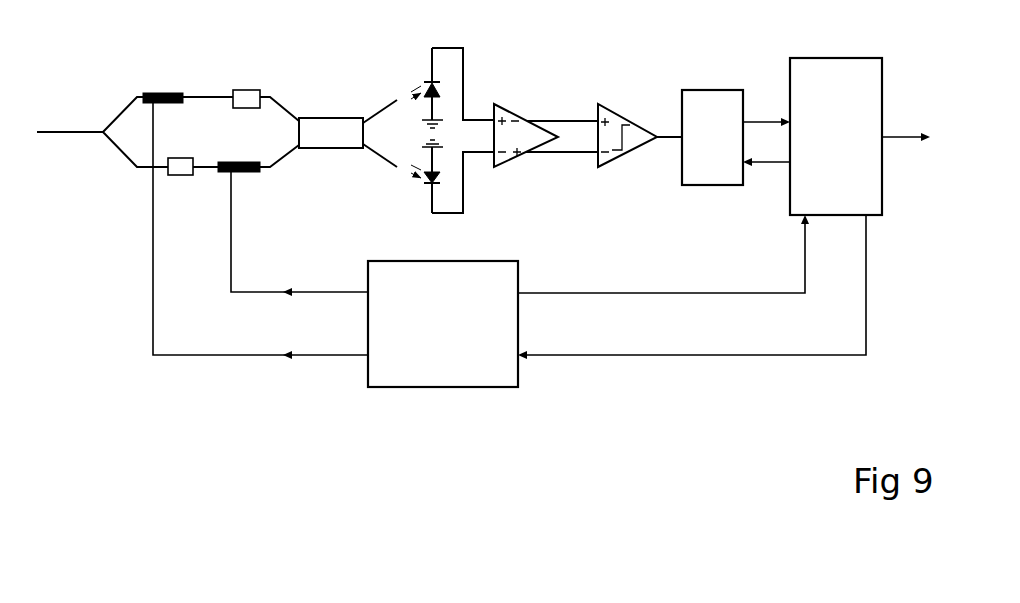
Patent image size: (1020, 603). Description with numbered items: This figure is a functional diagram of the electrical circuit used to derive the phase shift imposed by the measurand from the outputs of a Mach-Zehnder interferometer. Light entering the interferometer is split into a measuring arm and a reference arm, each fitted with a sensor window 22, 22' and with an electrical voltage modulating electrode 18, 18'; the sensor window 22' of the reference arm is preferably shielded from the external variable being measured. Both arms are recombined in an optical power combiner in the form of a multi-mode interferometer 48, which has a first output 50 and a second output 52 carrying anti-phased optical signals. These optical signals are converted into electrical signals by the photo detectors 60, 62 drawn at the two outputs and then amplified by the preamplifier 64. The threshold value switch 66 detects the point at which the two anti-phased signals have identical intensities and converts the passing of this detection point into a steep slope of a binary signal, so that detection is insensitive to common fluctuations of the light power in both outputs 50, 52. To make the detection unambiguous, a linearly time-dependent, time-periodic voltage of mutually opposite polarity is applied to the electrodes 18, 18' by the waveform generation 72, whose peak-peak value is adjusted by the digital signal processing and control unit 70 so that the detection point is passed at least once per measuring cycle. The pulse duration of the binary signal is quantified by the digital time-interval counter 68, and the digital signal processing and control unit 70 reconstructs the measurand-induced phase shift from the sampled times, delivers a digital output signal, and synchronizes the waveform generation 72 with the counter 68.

The electrical voltage modulating electrode 18 is at (172, 69).
The electrical voltage modulating electrode 18' is at (255, 190).
The sensor window 22 is at (256, 72).
The sensor window 22' is at (182, 194).
The multi-mode interferometer 48 is at (323, 151).
The first output 50 is at (388, 105).
The second output 52 is at (383, 163).
The first photodiode 60 is at (426, 78).
The second photodiode 62 is at (427, 191).
The preamplifier 64 is at (515, 103).
The threshold value switch 66 is at (615, 104).
The digital time-interval counter 68 is at (712, 137).
The digital signal processing and control unit 70 is at (836, 136).
The waveform generation 72 is at (443, 324).